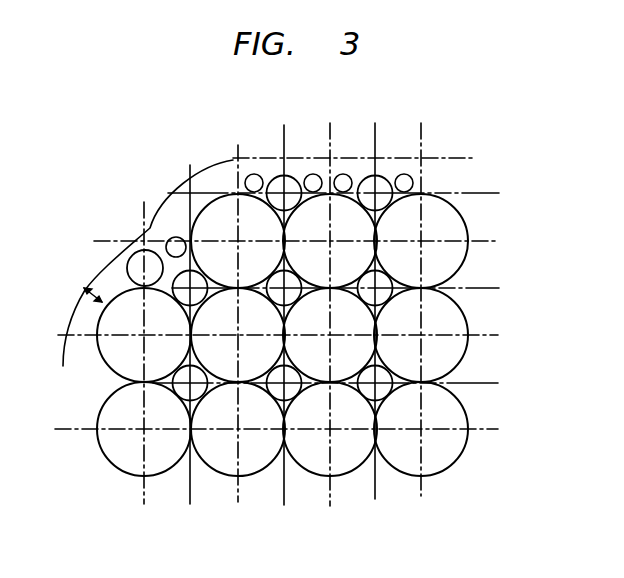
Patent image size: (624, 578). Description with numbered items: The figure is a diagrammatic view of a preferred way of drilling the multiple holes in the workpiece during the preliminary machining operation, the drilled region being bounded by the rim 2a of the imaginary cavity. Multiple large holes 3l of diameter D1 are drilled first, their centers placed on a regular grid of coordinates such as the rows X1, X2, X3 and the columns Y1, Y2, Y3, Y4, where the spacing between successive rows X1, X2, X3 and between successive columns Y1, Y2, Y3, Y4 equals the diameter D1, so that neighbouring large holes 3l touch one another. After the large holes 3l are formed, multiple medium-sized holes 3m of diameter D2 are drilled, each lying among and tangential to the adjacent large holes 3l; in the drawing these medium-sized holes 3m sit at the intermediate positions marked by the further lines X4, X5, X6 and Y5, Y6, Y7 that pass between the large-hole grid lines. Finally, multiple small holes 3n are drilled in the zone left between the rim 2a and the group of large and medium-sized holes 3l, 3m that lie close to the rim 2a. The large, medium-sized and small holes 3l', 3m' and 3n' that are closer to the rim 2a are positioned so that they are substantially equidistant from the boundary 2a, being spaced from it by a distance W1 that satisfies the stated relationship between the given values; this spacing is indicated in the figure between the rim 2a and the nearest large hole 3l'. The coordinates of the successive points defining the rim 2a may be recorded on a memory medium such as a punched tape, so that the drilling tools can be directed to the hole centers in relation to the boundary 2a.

The rim of the imaginary cavity 2a is at (440, 157).
The large holes 3l is at (441, 435).
The large holes closer to the rim 3l' is at (101, 338).
The medium-sized holes 3m is at (129, 425).
The medium-sized holes closer to the rim 3m' is at (108, 235).
The small holes 3n is at (385, 136).
The small holes closer to the rim 3n' is at (267, 138).
The distance from the boundary W1 is at (80, 291).
The coordinate X1 is at (278, 243).
The coordinate X2 is at (256, 332).
The coordinate X3 is at (256, 429).
The scanning line X4 is at (350, 198).
The scanning line X5 is at (352, 291).
The scanning line X6 is at (343, 387).
The coordinate Y1 is at (130, 344).
The coordinate Y2 is at (235, 309).
The coordinate Y3 is at (329, 299).
The coordinate Y4 is at (422, 294).
The scanning line Y5 is at (190, 349).
The scanning line Y6 is at (282, 329).
The scanning line Y7 is at (375, 328).